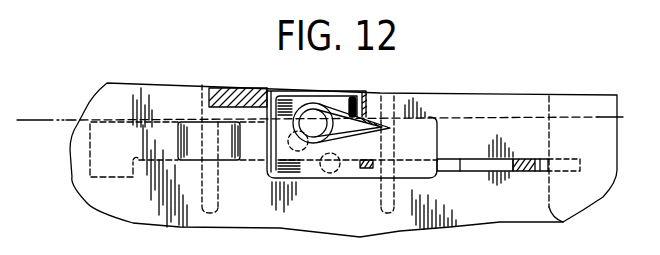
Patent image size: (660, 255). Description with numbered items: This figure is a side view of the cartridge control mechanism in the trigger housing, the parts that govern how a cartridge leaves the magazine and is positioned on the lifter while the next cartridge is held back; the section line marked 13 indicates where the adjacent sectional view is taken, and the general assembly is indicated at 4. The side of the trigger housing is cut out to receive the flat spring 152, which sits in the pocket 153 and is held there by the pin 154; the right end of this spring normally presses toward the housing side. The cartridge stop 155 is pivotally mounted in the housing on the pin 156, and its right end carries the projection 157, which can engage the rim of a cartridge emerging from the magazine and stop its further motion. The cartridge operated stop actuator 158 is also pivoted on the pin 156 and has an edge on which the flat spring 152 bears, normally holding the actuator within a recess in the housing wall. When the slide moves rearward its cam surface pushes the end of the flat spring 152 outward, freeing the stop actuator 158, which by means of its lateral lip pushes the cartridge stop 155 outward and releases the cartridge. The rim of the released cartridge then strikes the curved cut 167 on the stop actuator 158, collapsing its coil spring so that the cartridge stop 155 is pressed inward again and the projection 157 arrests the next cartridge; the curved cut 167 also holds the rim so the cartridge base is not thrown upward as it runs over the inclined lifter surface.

The cartridge body 4 is at (463, 91).
The section line 13- 13 is at (27, 116).
The flat spring 152 is at (481, 117).
The pocket 153 is at (237, 159).
The pin 154 is at (200, 195).
The cartridge stop 155 is at (467, 170).
The pin 156 is at (375, 189).
The projection 157 is at (523, 172).
The cartridge operated stop actuator 158 is at (423, 147).
The curved cut 167 is at (318, 104).